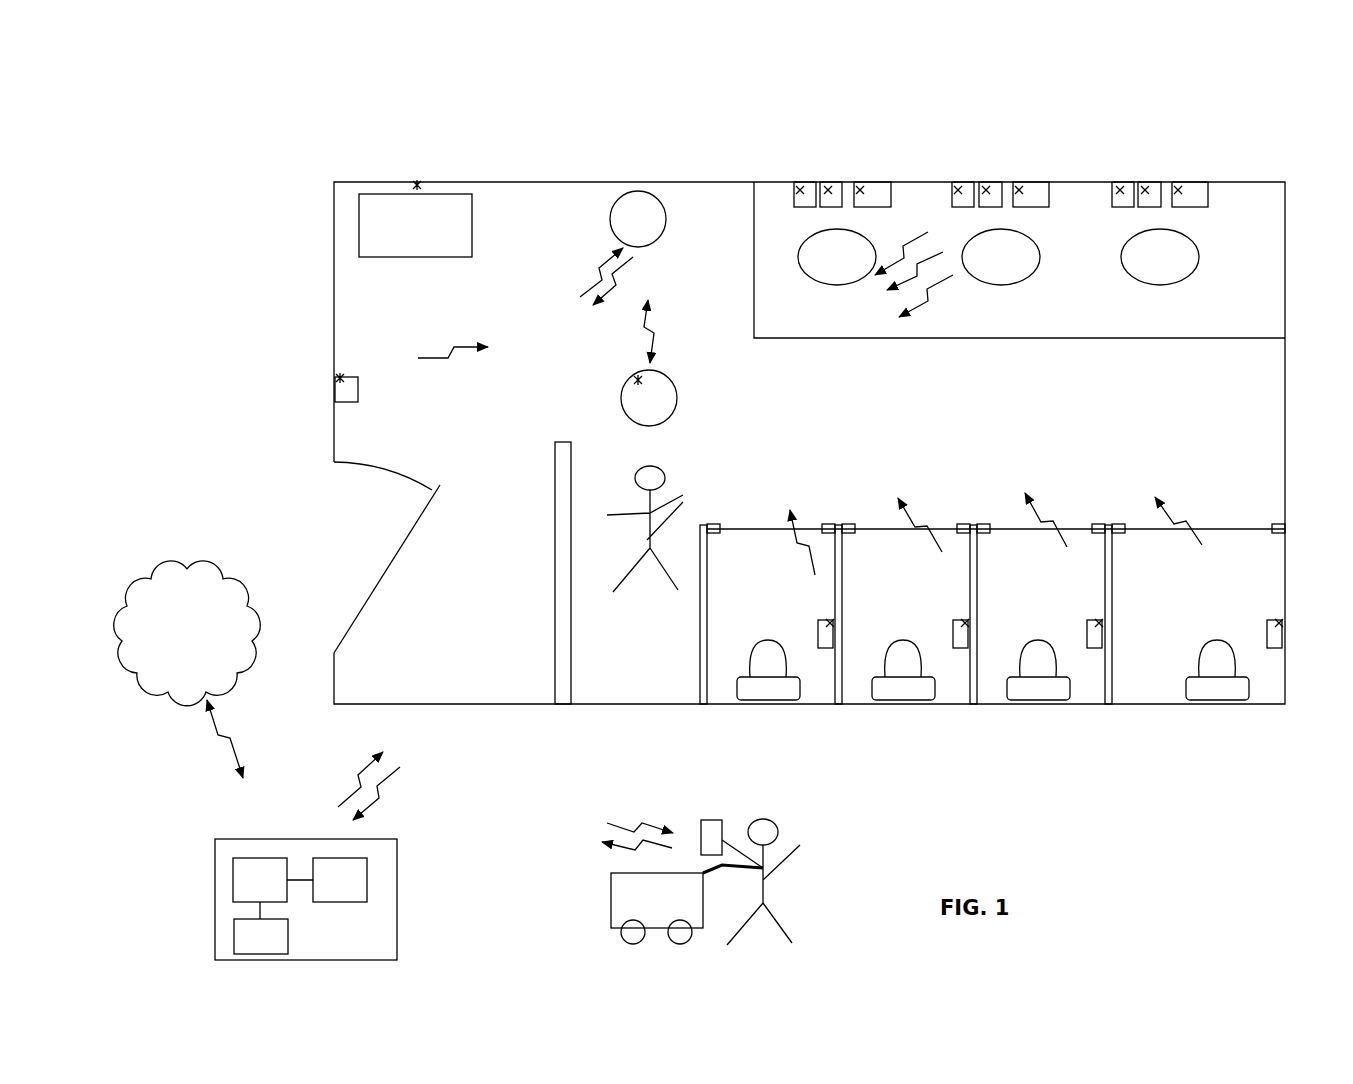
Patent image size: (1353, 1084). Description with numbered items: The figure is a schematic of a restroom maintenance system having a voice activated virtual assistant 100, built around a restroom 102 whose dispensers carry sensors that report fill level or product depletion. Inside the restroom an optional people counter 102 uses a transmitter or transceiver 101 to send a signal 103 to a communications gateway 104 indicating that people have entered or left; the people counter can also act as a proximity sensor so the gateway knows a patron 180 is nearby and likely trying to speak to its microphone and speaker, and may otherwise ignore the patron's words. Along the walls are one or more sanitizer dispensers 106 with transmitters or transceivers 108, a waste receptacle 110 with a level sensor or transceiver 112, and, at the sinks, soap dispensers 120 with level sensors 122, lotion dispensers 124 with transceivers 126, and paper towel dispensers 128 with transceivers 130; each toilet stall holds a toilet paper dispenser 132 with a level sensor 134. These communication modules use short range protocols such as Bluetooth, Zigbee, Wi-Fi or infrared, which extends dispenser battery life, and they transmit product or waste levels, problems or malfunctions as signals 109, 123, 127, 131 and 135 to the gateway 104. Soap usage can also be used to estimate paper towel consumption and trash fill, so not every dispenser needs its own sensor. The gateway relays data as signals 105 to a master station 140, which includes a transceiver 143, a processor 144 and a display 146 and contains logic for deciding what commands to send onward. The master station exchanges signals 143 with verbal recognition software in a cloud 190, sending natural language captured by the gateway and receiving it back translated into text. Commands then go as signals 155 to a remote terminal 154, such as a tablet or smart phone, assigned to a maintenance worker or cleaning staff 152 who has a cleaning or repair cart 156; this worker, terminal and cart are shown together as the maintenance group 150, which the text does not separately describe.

The restroom maintenance system 100 is at (285, 417).
The transmitter or transceiver 101 is at (638, 380).
The restroom 102 is at (622, 393).
The signal 103 is at (653, 322).
The communications gateway 104 is at (657, 238).
The signals 105 is at (630, 267).
The sanitizer dispenser 106 is at (358, 390).
The transmitter or transceiver 108 is at (340, 378).
The signal 109 is at (442, 347).
The waste receptacle 110 is at (393, 192).
The transmitter or transceiver 112 is at (415, 183).
The soap dispenser 120 is at (800, 190).
The level sensor 122 is at (798, 190).
The signal 123 is at (920, 245).
The lotion dispenser 124 is at (821, 186).
The transmitter or transceiver 126 is at (829, 188).
The signal 127 is at (936, 264).
The paper towel dispenser 128 is at (873, 182).
The transmitter or transceiver 130 is at (858, 190).
The signal 131 is at (945, 287).
The toilet paper dispenser 132 is at (818, 635).
The level sensor 134 is at (830, 622).
The signal 135 is at (920, 515).
The master station 140 is at (435, 868).
The transceiver 143 is at (235, 720).
The processor 144 is at (242, 858).
The display 146 is at (235, 937).
The maintenance personnel system 150 is at (840, 808).
The maintenance worker 152 is at (782, 882).
The remote terminal 154 is at (707, 818).
The signals 155 is at (625, 817).
The cleaning cart 156 is at (610, 902).
The patron 180 is at (668, 529).
The cloud 190 is at (230, 598).